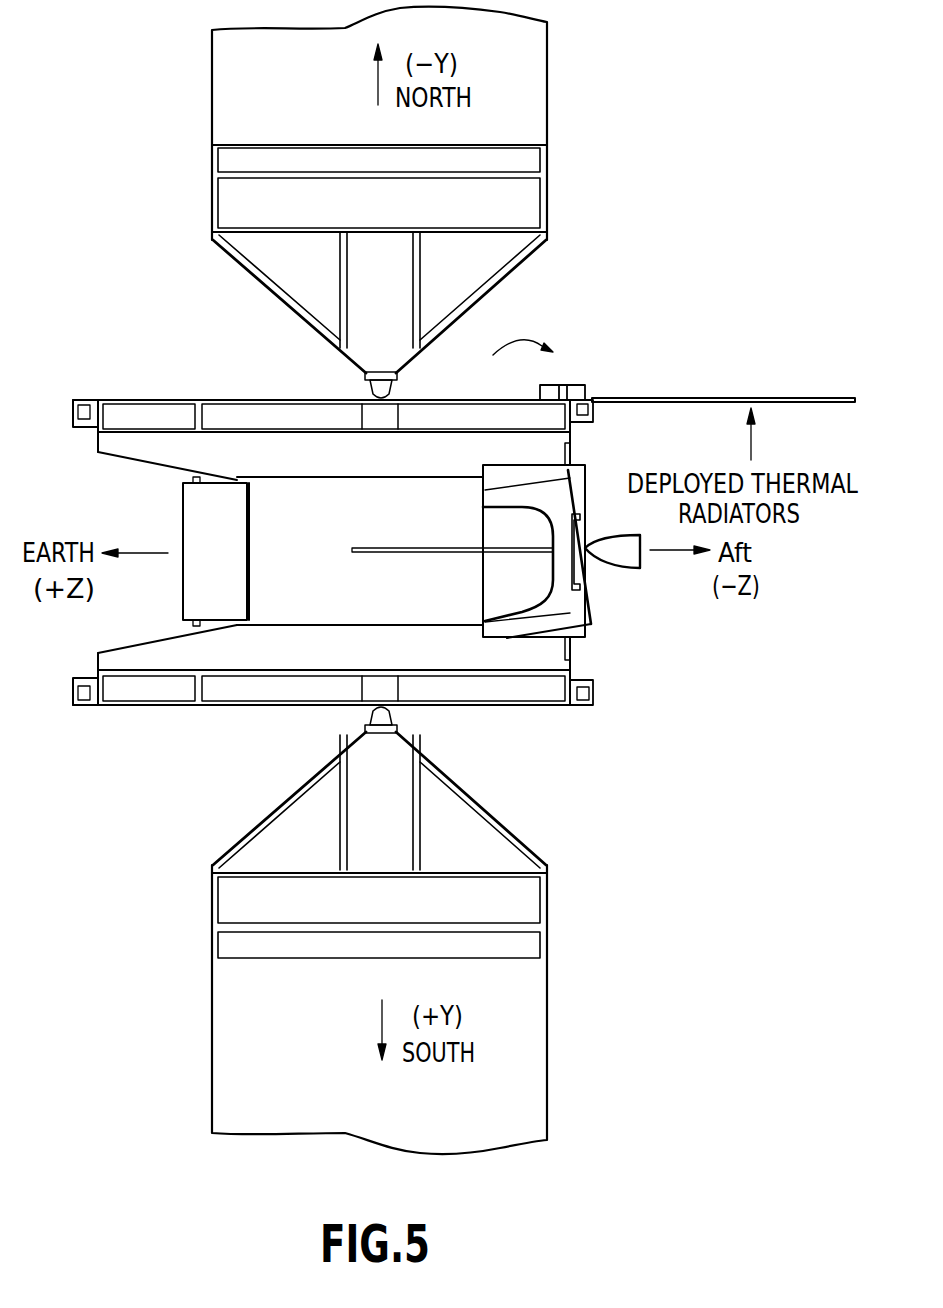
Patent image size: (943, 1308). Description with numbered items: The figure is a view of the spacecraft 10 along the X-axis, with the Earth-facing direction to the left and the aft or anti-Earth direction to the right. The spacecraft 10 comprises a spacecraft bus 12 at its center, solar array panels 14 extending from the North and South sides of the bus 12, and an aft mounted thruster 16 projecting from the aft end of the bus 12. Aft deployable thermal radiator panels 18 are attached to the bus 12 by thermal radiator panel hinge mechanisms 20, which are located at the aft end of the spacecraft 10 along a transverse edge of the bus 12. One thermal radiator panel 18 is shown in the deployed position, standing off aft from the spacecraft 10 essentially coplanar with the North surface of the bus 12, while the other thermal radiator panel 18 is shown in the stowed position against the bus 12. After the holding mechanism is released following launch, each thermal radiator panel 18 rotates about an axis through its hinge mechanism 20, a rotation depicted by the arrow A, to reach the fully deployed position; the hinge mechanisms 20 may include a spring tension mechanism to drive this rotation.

The spacecraft 10 is at (668, 262).
The spacecraft bus 12 is at (483, 397).
The solar array panels 14 is at (547, 195).
The aft mounted thruster 16 is at (617, 572).
The aft deployable thermal radiator panels 18 is at (645, 398).
The thermal radiator panel hinge mechanisms 20 is at (575, 370).
The arrow A is at (517, 345).